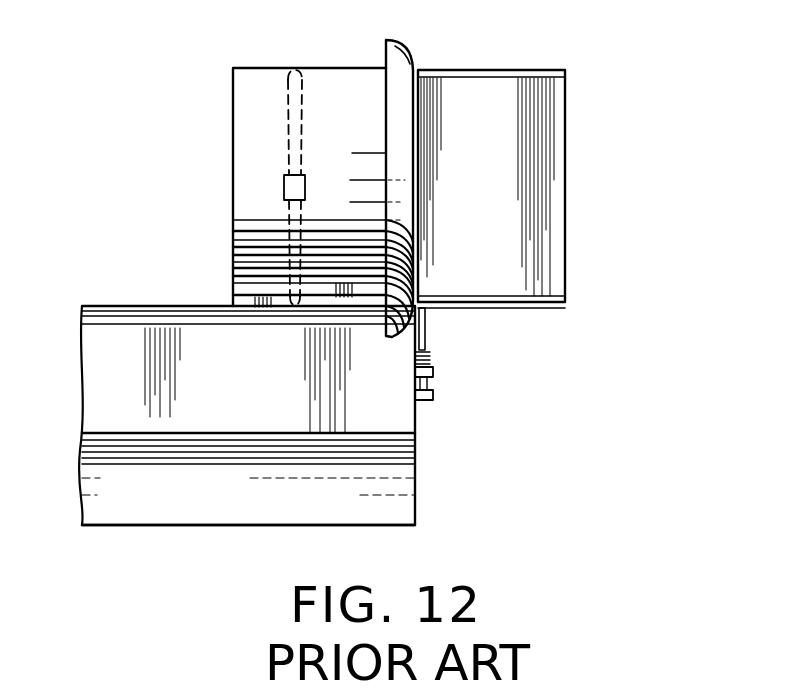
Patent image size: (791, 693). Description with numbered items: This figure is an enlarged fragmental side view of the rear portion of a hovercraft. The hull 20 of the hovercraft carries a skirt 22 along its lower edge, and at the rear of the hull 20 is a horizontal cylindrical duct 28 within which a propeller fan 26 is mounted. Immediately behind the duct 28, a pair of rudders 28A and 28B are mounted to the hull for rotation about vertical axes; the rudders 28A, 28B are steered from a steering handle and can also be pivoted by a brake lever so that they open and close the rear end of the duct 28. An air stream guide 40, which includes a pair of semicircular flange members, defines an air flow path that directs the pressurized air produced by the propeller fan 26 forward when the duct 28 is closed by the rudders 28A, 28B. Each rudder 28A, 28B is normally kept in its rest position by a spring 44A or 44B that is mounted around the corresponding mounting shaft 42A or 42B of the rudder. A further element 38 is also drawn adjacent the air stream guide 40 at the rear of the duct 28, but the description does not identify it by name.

The hull 20 is at (110, 336).
The skirt 22 is at (142, 508).
The propeller fan 26 is at (287, 105).
The horizontal cylindrical duct 28 is at (246, 226).
The rudder 28A is at (578, 189).
The rudder 28B is at (557, 110).
The curved plate 38 is at (384, 54).
The air stream guide 40 is at (407, 60).
The mounting shaft 42A is at (510, 331).
The mounting shaft 42B is at (428, 321).
The spring 44A is at (509, 376).
The spring 44B is at (432, 357).